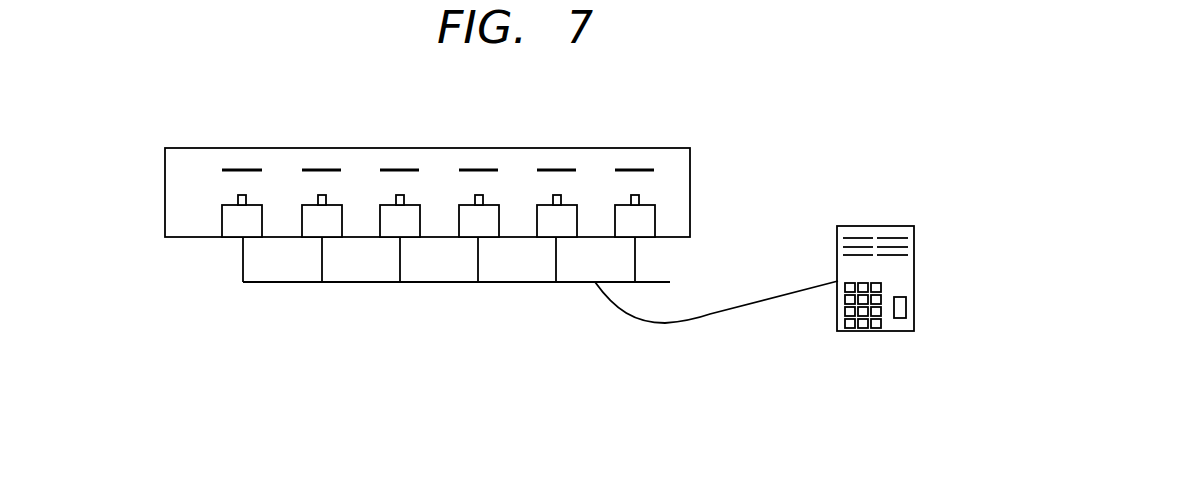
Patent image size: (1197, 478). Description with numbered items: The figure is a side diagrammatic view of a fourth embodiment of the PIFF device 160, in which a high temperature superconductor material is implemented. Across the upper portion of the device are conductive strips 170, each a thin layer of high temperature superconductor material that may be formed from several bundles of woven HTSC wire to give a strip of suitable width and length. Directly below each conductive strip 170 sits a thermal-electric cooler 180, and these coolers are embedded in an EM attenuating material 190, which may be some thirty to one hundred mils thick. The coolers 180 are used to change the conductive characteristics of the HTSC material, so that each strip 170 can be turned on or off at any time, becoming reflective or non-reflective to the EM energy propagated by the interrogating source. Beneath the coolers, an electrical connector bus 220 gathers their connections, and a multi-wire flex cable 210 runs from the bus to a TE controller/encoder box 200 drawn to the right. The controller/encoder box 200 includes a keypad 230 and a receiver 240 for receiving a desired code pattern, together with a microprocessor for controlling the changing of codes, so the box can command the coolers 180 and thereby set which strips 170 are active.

The PIFF device 160 is at (463, 131).
The conductive strip 170 is at (384, 170).
The thermal-electric cooler 180 is at (233, 224).
The EM attenuating material 190 is at (677, 170).
The TE controller/encoder box 200 is at (905, 270).
The multi-wire flex cable 210 is at (712, 313).
The electrical connector bus 220 is at (441, 284).
The keypad 230 is at (848, 325).
The receiver 240 is at (905, 307).